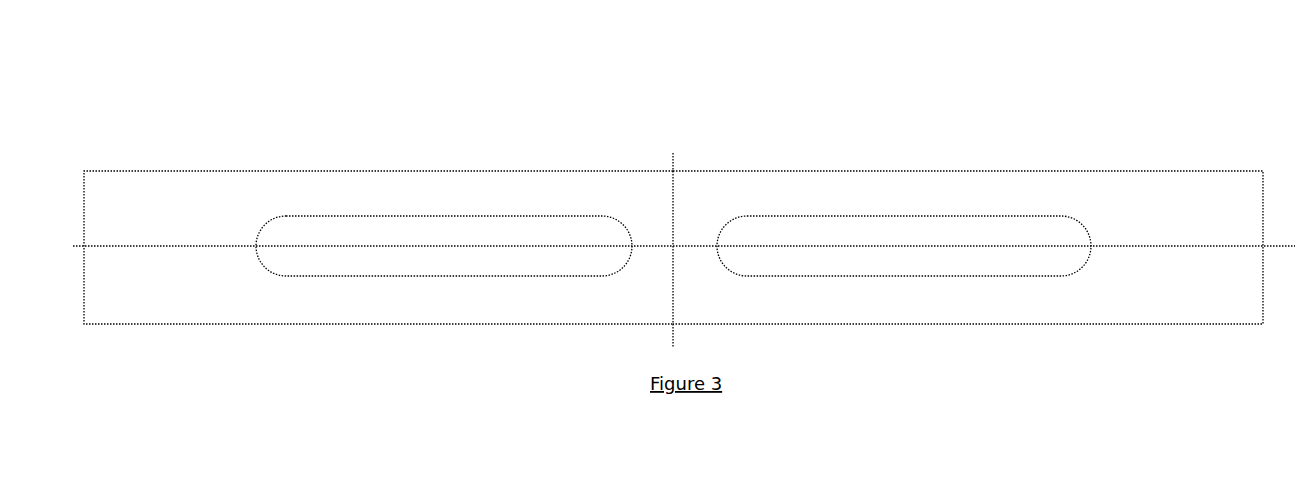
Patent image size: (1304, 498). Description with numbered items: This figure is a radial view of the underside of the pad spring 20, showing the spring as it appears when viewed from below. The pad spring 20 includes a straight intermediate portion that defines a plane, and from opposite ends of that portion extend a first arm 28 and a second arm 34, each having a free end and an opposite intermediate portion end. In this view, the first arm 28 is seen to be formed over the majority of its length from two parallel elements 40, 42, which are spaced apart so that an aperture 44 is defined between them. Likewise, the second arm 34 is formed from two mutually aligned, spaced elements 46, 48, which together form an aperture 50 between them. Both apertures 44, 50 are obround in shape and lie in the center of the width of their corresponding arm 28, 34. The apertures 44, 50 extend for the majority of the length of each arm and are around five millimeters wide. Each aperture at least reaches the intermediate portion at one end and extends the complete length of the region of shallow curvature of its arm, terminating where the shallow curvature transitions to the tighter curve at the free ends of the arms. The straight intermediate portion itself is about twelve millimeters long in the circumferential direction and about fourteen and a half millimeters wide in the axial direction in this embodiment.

The pad spring 20 is at (712, 135).
The first arm 28 is at (378, 246).
The second arm 34 is at (968, 259).
The parallel element 40 is at (347, 188).
The parallel element 42 is at (416, 307).
The aperture 44 is at (516, 262).
The element 46 is at (988, 187).
The element 48 is at (825, 302).
The aperture 50 is at (1041, 263).